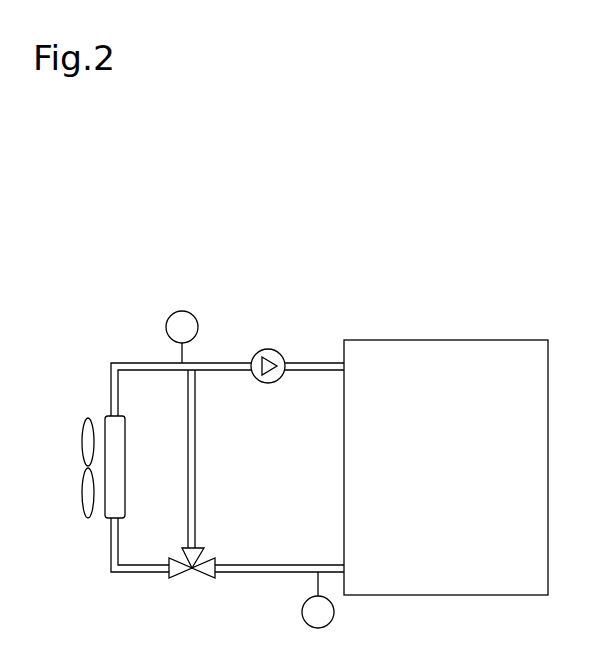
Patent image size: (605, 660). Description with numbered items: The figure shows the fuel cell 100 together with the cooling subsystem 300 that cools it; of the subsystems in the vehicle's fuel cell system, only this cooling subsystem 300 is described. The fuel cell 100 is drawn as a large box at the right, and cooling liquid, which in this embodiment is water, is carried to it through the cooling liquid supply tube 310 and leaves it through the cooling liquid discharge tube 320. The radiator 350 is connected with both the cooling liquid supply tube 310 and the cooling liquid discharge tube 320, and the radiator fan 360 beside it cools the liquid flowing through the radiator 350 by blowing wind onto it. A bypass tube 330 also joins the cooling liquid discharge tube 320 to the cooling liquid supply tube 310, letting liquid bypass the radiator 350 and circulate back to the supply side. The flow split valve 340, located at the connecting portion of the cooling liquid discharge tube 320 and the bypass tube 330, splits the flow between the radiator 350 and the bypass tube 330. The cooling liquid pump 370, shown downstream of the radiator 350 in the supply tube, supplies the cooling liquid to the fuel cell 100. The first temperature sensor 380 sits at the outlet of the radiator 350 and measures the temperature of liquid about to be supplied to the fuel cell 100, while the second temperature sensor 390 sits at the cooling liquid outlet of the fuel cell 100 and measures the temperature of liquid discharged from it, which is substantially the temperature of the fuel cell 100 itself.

The fuel cell 100 is at (523, 340).
The cooling subsystem 300 is at (347, 263).
The cooling liquid supply tube 310 is at (310, 363).
The cooling liquid discharge tube 320 is at (233, 572).
The bypass tube 330 is at (201, 455).
The flow split valve 340 is at (206, 552).
The radiator 350 is at (127, 463).
The radiator fan 360 is at (82, 445).
The cooling liquid pump 370 is at (275, 349).
The first temperature sensor 380 is at (183, 311).
The second temperature sensor 390 is at (334, 612).